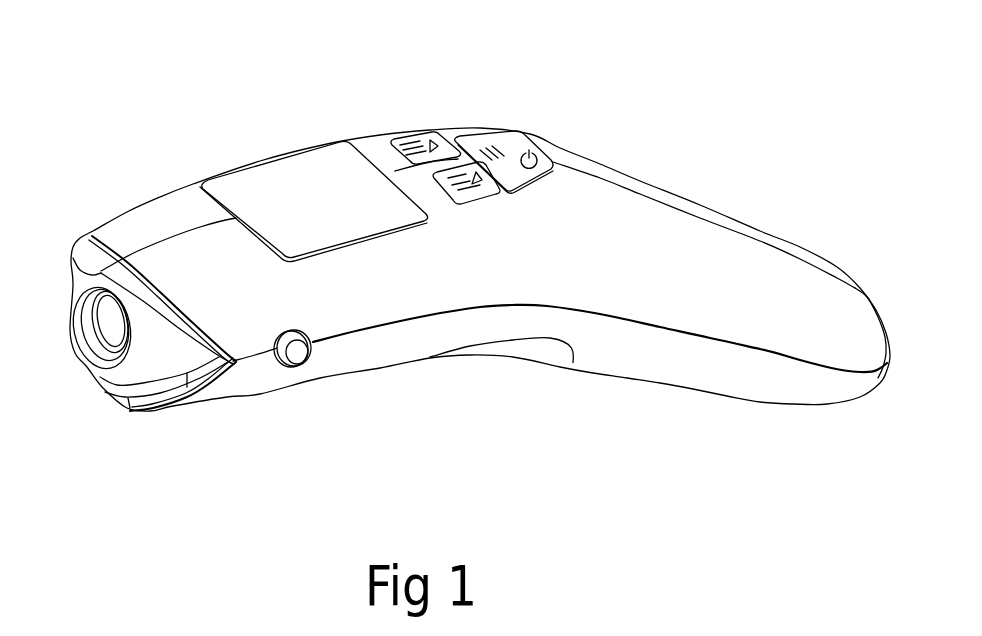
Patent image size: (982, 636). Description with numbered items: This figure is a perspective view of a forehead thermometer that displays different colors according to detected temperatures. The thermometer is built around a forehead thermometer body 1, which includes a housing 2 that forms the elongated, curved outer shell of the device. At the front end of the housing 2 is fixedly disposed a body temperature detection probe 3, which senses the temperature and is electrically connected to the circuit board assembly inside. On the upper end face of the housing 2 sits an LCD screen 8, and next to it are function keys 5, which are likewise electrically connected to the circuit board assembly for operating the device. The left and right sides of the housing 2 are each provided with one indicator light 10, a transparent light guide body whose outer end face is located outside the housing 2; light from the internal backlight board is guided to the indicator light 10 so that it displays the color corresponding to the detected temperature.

The forehead thermometer body 1 is at (607, 385).
The housing 2 is at (433, 282).
The body temperature detection probe 3 is at (113, 330).
The function key 5 is at (479, 182).
The LCD screen 8 is at (315, 193).
The indicator light 10 is at (297, 353).